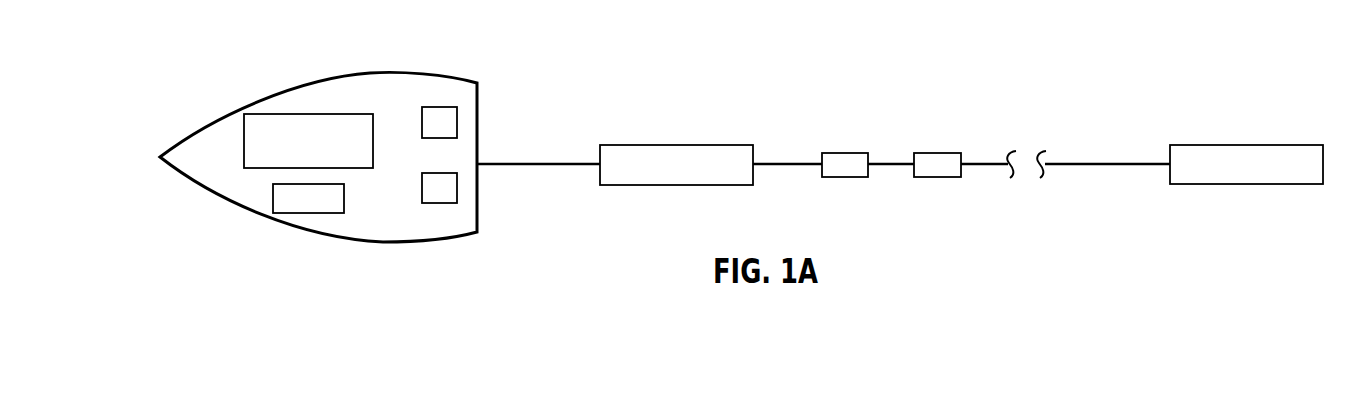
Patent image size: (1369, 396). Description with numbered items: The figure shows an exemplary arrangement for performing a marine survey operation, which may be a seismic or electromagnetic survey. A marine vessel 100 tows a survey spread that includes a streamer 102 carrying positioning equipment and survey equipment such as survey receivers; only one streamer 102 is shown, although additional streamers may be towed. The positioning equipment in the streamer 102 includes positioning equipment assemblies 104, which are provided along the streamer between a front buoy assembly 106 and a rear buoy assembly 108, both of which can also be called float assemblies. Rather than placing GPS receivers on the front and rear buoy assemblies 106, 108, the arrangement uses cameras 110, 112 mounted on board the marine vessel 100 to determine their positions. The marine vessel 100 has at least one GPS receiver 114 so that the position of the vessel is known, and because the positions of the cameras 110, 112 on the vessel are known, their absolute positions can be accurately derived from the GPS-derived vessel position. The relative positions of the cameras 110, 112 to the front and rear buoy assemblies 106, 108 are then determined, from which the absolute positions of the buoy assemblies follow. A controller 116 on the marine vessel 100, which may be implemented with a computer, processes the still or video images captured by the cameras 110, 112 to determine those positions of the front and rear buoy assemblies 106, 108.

The marine vessel 100 is at (377, 73).
The streamer 102 is at (556, 126).
The positioning equipment assemblies 104 is at (845, 152).
The front buoy assembly 106 is at (655, 144).
The rear buoy assembly 108 is at (1227, 143).
The camera 110 is at (440, 107).
The camera 112 is at (438, 203).
The GPS receiver 114 is at (309, 213).
The controller 116 is at (272, 113).